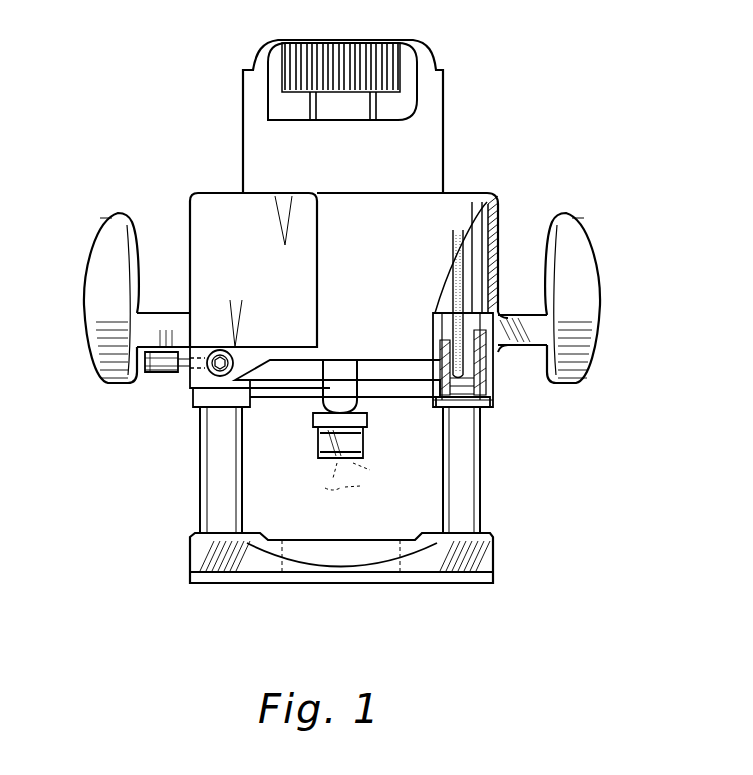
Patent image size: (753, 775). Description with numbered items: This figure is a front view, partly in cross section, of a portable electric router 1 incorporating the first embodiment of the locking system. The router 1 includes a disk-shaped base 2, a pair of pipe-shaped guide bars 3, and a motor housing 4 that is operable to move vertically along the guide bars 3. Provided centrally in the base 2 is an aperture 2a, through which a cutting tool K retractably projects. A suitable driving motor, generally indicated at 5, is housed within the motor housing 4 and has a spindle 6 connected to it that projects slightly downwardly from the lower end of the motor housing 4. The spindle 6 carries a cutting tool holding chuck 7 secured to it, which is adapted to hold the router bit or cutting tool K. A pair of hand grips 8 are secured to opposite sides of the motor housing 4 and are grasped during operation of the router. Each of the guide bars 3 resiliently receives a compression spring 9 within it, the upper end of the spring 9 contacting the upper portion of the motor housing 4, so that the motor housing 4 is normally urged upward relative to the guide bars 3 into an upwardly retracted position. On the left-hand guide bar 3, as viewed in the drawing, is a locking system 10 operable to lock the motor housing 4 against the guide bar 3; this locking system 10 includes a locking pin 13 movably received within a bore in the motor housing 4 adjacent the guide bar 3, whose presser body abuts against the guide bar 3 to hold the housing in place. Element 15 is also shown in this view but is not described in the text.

The portable electric router 1 is at (451, 105).
The base 2 is at (493, 557).
The aperture 2a is at (390, 563).
The guide bars 3 is at (213, 487).
The motor housing 4 is at (497, 252).
The driving motor 5 is at (418, 148).
The spindle 6 is at (357, 408).
The cutting tool holding chuck 7 is at (337, 463).
The hand grips 8 is at (92, 297).
The compression spring 9 is at (497, 383).
The locking system 10 is at (165, 375).
The locking pin 13 is at (160, 419).
The clamping member 15 is at (153, 376).
The cutting tool K is at (380, 472).